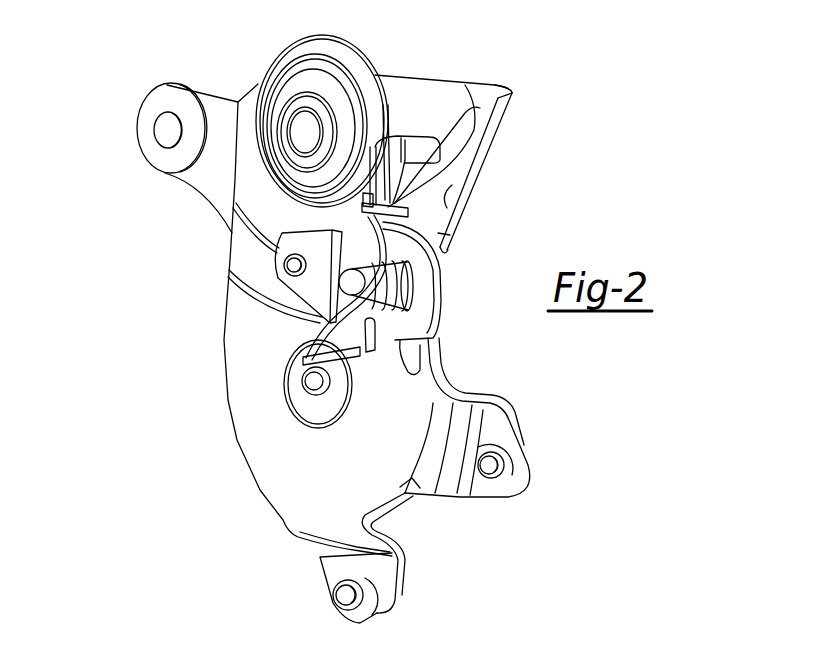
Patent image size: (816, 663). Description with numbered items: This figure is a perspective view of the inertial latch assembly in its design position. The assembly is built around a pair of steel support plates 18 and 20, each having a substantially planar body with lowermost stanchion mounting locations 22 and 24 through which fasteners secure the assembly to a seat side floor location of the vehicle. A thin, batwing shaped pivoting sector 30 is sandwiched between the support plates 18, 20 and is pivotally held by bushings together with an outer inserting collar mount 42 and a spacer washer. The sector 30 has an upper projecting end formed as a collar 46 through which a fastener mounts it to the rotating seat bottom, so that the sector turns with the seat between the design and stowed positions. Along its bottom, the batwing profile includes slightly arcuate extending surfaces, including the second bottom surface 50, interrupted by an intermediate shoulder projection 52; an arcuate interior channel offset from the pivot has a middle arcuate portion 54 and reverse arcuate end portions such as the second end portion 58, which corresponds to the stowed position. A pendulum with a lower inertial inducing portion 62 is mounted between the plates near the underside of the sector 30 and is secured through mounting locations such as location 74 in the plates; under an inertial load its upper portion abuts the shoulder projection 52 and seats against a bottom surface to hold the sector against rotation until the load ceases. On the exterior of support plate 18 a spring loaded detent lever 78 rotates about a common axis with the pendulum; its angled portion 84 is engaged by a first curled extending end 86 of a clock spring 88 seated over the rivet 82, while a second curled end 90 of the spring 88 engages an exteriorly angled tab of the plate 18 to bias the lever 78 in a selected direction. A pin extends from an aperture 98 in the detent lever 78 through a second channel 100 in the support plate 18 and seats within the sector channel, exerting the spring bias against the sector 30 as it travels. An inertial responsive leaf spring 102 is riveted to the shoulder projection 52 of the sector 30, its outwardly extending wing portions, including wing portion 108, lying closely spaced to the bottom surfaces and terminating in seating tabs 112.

The support plate 18 is at (233, 388).
The support plate 20 is at (441, 378).
The stanchion mounting locations 22 is at (503, 492).
The stanchion mounting locations 24 is at (530, 475).
The pivoting sector 30 is at (205, 182).
The outer inserting collar mount 42 is at (288, 82).
The collar 46 is at (143, 103).
The second bottom arcuate extending surface 50 is at (474, 83).
The intermediate shoulder projection 52 is at (450, 256).
The middle arcuate portion 54 is at (412, 165).
The second reverse arcuate extending end portion 58 is at (442, 148).
The lower inertial inducing portion 62 is at (396, 508).
The mounting location 74 is at (300, 400).
The detent lever 78 is at (315, 306).
The rivet 82 is at (345, 282).
The angled portion 84 is at (365, 350).
The first curled extending end 86 is at (333, 376).
The clock spring 88 is at (410, 288).
The second curled end 90 is at (389, 130).
The aperture 98 is at (287, 263).
The second channel 100 is at (300, 218).
The inertial responsive leaf spring 102 is at (447, 200).
The second wing portion 108 is at (500, 117).
The seating tab 112 is at (505, 88).